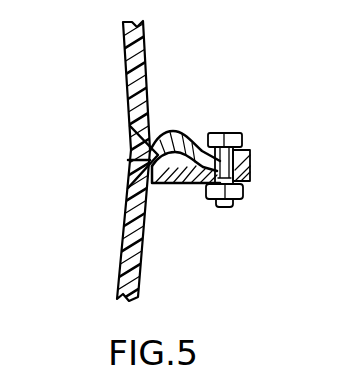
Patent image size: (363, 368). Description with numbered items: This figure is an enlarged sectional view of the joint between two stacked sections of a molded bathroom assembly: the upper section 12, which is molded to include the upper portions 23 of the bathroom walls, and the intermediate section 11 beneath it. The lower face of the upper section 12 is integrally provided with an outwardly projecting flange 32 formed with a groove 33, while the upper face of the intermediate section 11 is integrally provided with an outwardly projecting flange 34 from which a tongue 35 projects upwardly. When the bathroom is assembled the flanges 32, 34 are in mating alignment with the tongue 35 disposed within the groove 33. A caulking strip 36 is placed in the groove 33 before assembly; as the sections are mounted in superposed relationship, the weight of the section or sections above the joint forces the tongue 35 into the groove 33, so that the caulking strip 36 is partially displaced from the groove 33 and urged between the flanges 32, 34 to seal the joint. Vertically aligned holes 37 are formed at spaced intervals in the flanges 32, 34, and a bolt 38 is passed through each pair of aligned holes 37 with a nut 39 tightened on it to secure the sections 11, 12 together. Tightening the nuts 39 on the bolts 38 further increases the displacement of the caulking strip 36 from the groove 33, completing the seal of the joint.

The intermediate section 11 is at (141, 270).
The upper section 12 is at (147, 32).
The upper portions of the bathroom walls 23 is at (137, 62).
The outwardly projecting flange 32 is at (241, 163).
The groove 33 is at (148, 167).
The outwardly projecting flange 34 is at (244, 188).
The tongue 35 is at (143, 181).
The caulking strip 36 is at (193, 185).
The holes 37 is at (249, 179).
The bolt 38 is at (218, 133).
The nut 39 is at (230, 201).